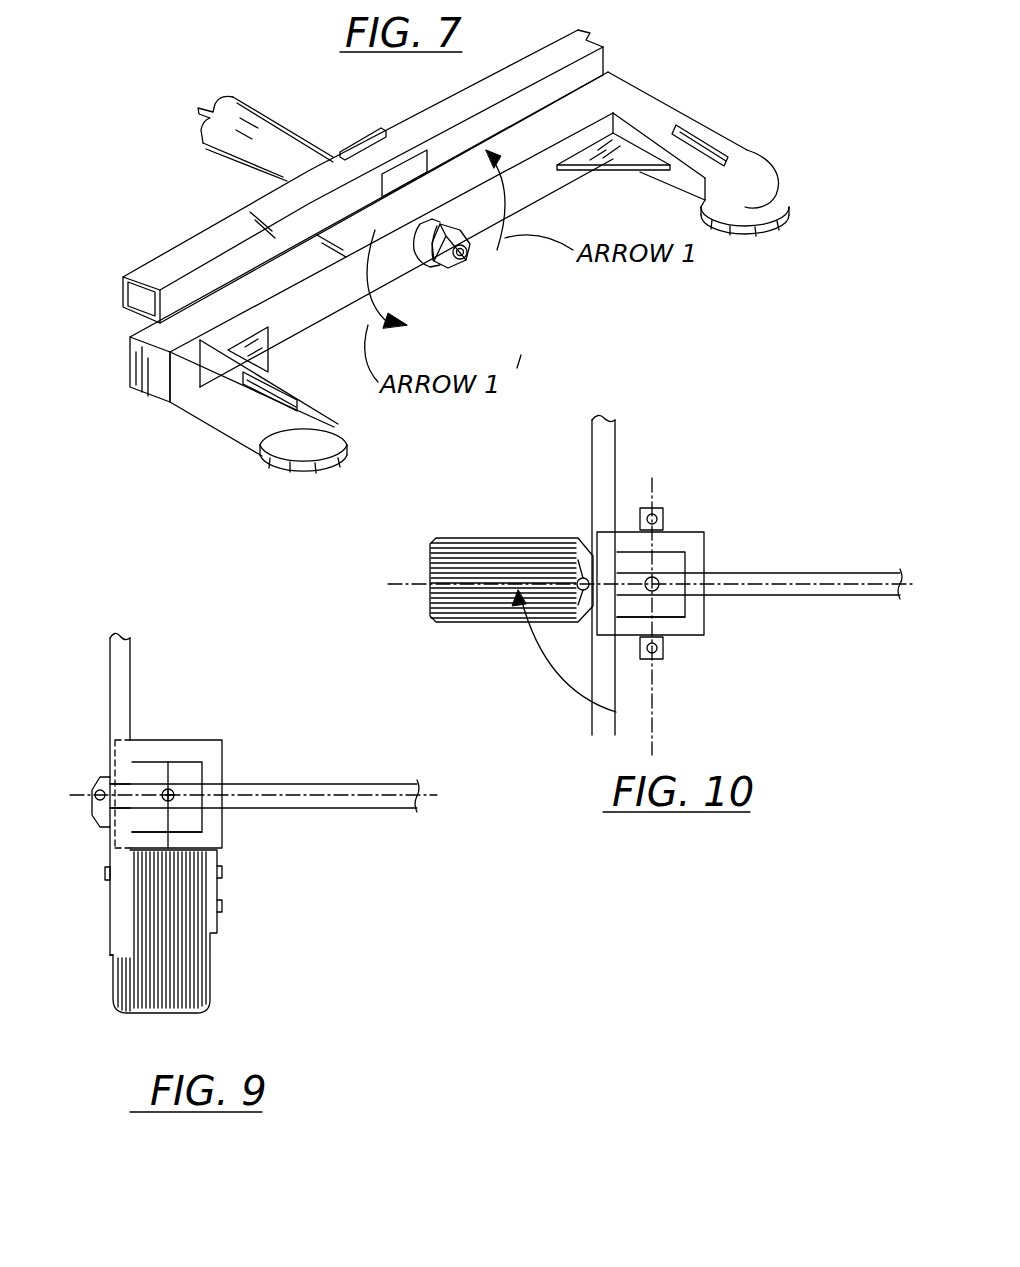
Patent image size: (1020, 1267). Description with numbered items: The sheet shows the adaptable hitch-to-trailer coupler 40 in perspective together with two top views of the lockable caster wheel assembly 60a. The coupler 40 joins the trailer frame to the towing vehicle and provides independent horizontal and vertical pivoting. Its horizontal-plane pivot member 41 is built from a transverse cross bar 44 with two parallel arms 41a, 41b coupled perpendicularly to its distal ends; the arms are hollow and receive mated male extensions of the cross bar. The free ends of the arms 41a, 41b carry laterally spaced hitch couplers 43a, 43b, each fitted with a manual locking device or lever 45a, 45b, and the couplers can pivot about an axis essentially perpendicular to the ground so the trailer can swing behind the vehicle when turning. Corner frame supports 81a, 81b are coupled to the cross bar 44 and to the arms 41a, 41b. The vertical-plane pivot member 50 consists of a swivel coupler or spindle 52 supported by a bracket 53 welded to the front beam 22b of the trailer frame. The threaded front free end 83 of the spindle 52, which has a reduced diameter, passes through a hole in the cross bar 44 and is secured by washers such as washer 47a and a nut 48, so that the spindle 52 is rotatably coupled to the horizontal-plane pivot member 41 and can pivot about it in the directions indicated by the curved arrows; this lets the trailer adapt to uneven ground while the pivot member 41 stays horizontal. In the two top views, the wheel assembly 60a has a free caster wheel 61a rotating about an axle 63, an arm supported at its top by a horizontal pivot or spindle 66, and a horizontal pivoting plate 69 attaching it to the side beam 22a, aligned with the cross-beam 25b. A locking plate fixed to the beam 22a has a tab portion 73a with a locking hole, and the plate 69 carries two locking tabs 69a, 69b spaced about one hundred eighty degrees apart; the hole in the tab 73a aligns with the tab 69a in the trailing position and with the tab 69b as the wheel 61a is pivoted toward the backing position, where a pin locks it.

In FIG. 10, the side beam 22a is at (607, 462).
In FIG. 9, the side beam 22a is at (123, 668).
In FIG. 7, the front beam 22b is at (603, 50).
In FIG. 10, the cross-beam 25b is at (807, 572).
In FIG. 9, the cross-beam 25b is at (390, 810).
In FIG. 7, the adaptable hitch-to-trailer coupler 40 is at (135, 412).
In FIG. 7, the horizontal-plane pivot member 41 is at (805, 157).
In FIG. 7, the parallel arm 41a is at (200, 403).
In FIG. 7, the parallel arm 41b is at (661, 103).
In FIG. 7, the hitch coupler 43a is at (315, 441).
In FIG. 7, the hitch coupler 43b is at (752, 199).
In FIG. 7, the transverse cross bar 44 is at (598, 97).
In FIG. 7, the manual locking device or lever 45a is at (272, 409).
In FIG. 7, the manual locking device or lever 45b is at (727, 139).
In FIG. 7, the washer 47a is at (423, 270).
In FIG. 7, the nut 48 is at (444, 276).
In FIG. 7, the vertical-plane pivot member 50 is at (200, 184).
In FIG. 7, the swivel coupler or spindle 52 is at (235, 117).
In FIG. 7, the bracket 53 is at (364, 132).
In FIG. 9, the wheel assembly 60a is at (266, 952).
In FIG. 9, the free caster wheel 61a is at (190, 986).
In FIG. 9, the axle 63 is at (222, 909).
In FIG. 9, the horizontal pivot or spindle 66 is at (222, 872).
In FIG. 10, the horizontal pivoting plate 69 is at (702, 548).
In FIG. 9, the horizontal pivoting plate 69 is at (202, 750).
In FIG. 10, the locking tab 69a is at (664, 657).
In FIG. 9, the locking tab 69a is at (232, 784).
In FIG. 10, the locking tab 69b is at (664, 515).
In FIG. 9, the locking tab 69b is at (94, 812).
In FIG. 10, the tab portion 73a is at (582, 540).
In FIG. 9, the tab portion 73a is at (108, 765).
In FIG. 7, the corner frame support 81a is at (263, 355).
In FIG. 7, the corner frame support 81b is at (606, 151).
In FIG. 7, the front free end 83 is at (467, 266).